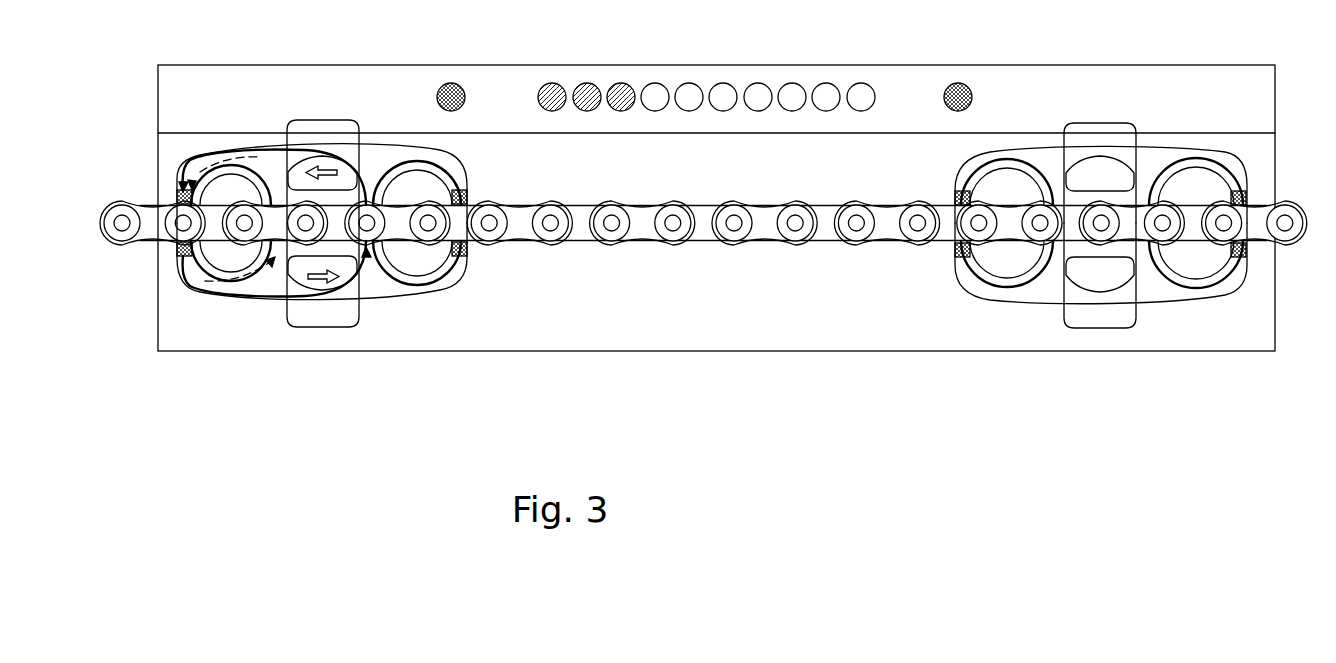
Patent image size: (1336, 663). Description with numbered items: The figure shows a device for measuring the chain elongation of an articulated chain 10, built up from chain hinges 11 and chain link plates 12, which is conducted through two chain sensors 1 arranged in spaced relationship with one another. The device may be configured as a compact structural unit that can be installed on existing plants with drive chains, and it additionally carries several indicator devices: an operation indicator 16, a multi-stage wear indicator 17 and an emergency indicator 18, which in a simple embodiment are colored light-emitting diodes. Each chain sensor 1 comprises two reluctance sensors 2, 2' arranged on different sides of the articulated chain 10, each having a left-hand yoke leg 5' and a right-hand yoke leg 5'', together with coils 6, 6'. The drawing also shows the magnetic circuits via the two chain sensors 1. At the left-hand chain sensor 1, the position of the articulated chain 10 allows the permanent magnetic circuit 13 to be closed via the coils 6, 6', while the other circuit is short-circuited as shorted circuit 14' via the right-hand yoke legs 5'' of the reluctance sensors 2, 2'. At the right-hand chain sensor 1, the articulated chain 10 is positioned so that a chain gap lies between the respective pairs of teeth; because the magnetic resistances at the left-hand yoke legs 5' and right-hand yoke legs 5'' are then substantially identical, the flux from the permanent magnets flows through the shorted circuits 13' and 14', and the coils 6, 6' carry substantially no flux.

The chain sensor 1 is at (135, 182).
The reluctance sensor 2 is at (715, 270).
The reluctance sensor 2' is at (717, 170).
The left-hand yoke leg 5' is at (621, 289).
The right-hand yoke leg 5'' is at (808, 289).
The coil 6 is at (711, 320).
The coil 6' is at (711, 117).
The articulated chain 10 is at (703, 311).
The chain hinges 11 is at (733, 222).
The chain link plates 12 is at (768, 227).
The magnetic circuit 13 is at (275, 283).
The shorted circuit 13' is at (626, 286).
The shorted circuit 14' is at (808, 328).
The operation indicator 16 is at (451, 83).
The wear indicator 17 is at (637, 80).
The emergency indicator 18 is at (958, 83).